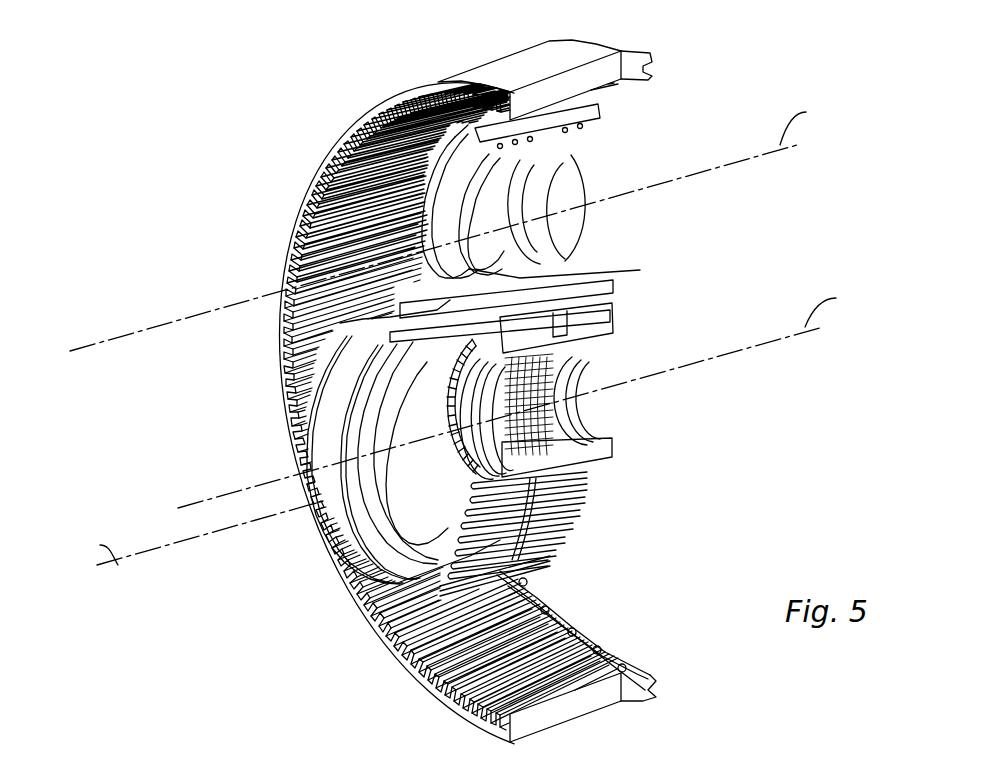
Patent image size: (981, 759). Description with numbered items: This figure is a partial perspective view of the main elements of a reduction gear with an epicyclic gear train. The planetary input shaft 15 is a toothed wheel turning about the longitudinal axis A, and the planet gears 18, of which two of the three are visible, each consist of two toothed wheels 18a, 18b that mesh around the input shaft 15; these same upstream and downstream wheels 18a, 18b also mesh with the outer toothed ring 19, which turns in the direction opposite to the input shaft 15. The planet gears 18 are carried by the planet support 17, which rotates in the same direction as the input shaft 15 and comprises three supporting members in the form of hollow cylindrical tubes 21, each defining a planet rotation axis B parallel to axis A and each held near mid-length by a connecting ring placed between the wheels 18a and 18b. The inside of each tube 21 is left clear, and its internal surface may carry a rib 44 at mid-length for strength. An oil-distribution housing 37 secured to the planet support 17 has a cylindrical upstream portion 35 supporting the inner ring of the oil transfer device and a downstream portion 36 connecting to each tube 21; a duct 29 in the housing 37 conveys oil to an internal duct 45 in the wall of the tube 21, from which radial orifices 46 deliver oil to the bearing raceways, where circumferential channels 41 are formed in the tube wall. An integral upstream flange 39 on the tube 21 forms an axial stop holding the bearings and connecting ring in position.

The planetary input shaft 15 is at (610, 450).
The planet support 17 is at (632, 235).
The planet gears 18 is at (420, 30).
The upstream toothed wheel 18a is at (468, 116).
The downstream toothed wheel 18b is at (502, 88).
The outer toothed ring 19 is at (308, 190).
The cylindrical tube 21 is at (578, 170).
The duct 29 is at (420, 352).
The upstream portion 35 is at (330, 345).
The downstream portion 36 is at (350, 378).
The oil-distribution housing 37 is at (205, 352).
The upstream flange 39 is at (378, 143).
The circumferential channels 41 is at (588, 130).
The rib 44 is at (548, 195).
The internal duct 45 is at (610, 325).
The radial orifices 46 is at (600, 283).